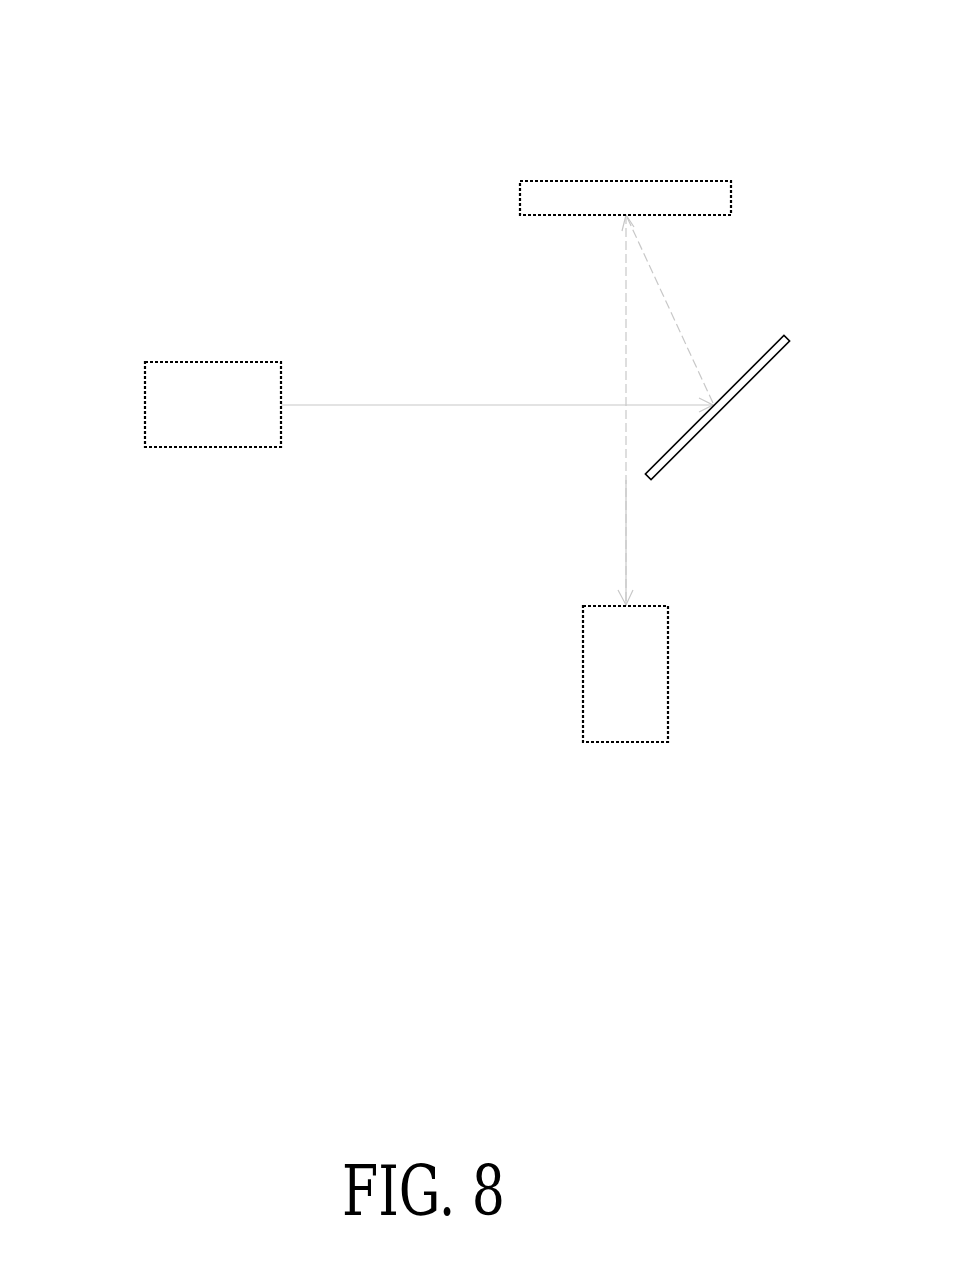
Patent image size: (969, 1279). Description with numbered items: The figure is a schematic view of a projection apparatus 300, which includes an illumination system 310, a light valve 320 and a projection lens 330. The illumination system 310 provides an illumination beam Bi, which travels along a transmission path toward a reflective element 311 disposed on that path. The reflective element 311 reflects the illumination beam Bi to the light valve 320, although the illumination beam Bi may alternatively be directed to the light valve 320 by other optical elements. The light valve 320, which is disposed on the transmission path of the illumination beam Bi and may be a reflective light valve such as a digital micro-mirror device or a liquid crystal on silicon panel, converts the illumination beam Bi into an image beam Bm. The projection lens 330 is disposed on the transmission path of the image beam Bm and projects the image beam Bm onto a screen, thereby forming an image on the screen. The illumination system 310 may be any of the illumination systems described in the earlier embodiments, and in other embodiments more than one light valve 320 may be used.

The projection apparatus 300 is at (117, 42).
The illumination system 310 is at (207, 380).
The reflective element 311 is at (743, 382).
The light valve 320 is at (577, 195).
The projection lens 330 is at (643, 665).
The illumination beam Bi is at (368, 403).
The image beam Bm is at (627, 535).